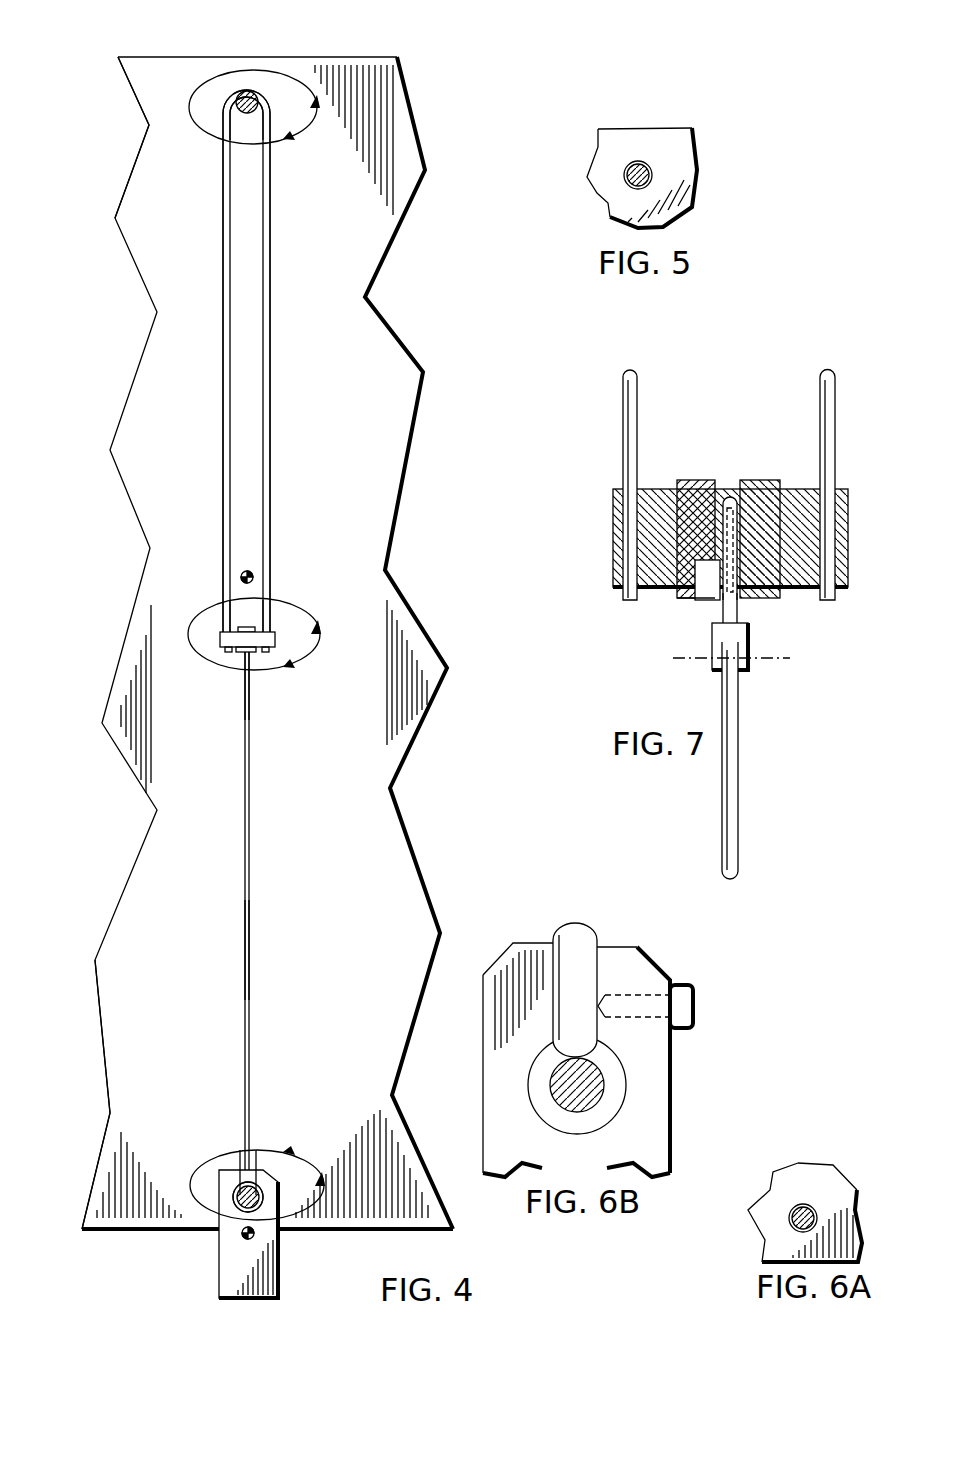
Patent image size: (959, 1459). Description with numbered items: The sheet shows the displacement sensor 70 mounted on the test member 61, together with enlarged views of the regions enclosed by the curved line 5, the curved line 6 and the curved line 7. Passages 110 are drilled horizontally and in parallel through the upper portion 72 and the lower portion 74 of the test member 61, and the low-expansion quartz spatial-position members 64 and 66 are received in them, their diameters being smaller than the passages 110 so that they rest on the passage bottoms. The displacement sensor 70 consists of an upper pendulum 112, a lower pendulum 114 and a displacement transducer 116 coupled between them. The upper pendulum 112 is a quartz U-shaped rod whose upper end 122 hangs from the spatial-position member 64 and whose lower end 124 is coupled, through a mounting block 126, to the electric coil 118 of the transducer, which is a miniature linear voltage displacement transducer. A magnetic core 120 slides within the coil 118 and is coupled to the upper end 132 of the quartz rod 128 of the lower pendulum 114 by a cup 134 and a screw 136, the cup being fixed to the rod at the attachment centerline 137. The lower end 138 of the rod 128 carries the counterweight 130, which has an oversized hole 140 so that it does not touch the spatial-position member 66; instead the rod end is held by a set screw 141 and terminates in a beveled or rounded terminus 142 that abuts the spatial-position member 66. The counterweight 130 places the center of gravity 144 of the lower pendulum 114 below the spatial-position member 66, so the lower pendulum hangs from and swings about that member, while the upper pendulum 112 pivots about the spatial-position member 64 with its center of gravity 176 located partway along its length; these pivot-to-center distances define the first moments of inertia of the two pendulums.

In FIG. 4, the curved line 5 is at (254, 107).
In FIG. 4, the curved line 6 is at (257, 1183).
In FIG. 4, the curved line 7 is at (254, 634).
In FIG. 4, the test member 61 is at (130, 374).
In FIG. 4, the spatial-position member 64 is at (244, 93).
In FIG. 5, the spatial-position member 64 is at (634, 165).
In FIG. 4, the spatial-position member 66 is at (245, 1189).
In FIG. 6B, the spatial-position member 66 is at (549, 1088).
In FIG. 6A, the spatial-position member 66 is at (797, 1207).
In FIG. 4, the displacement sensor 70 is at (214, 497).
In FIG. 4, the upper portion 72 is at (142, 105).
In FIG. 5, the upper portion 72 is at (598, 136).
In FIG. 4, the lower portion 74 is at (102, 1140).
In FIG. 6A, the lower portion 74 is at (745, 1208).
In FIG. 5, the passages 110 is at (625, 175).
In FIG. 6A, the passages 110 is at (790, 1218).
In FIG. 4, the upper pendulum 112 is at (270, 405).
In FIG. 4, the lower pendulum 114 is at (250, 940).
In FIG. 4, the displacement transducer 116 is at (236, 628).
In FIG. 7, the displacement transducer 116 is at (683, 468).
In FIG. 7, the electric coil 118 is at (672, 597).
In FIG. 7, the magnetic core 120 is at (698, 590).
In FIG. 4, the upper end 122 is at (270, 150).
In FIG. 4, the lower end 124 is at (268, 598).
In FIG. 7, the lower end 124 is at (623, 432).
In FIG. 4, the mounting block 126 is at (222, 640).
In FIG. 7, the mounting block 126 is at (613, 515).
In FIG. 4, the quartz rod 128 is at (245, 960).
In FIG. 4, the counterweight 130 is at (219, 1270).
In FIG. 6B, the counterweight 130 is at (483, 1010).
In FIG. 4, the upper end 132 is at (249, 660).
In FIG. 7, the upper end 132 is at (738, 752).
In FIG. 7, the cup 134 is at (748, 637).
In FIG. 7, the screw 136 is at (728, 496).
In FIG. 7, the attachment centerline 137 is at (697, 660).
In FIG. 4, the lower end 138 is at (250, 1145).
In FIG. 6B, the lower end 138 is at (550, 967).
In FIG. 4, the oversized hole 140 is at (237, 1212).
In FIG. 6B, the set screw 141 is at (688, 992).
In FIG. 6B, the terminus 142 is at (608, 1073).
In FIG. 4, the center of gravity 144 is at (258, 1235).
In FIG. 4, the center of gravity 176 is at (247, 569).